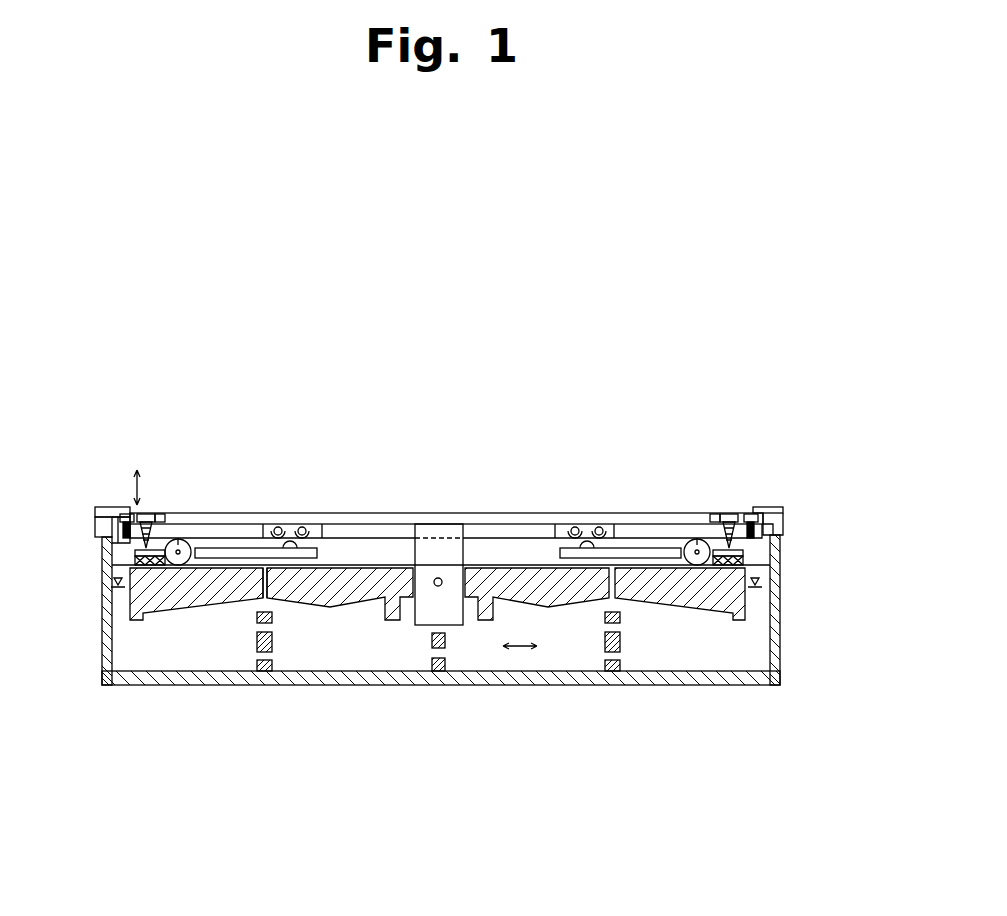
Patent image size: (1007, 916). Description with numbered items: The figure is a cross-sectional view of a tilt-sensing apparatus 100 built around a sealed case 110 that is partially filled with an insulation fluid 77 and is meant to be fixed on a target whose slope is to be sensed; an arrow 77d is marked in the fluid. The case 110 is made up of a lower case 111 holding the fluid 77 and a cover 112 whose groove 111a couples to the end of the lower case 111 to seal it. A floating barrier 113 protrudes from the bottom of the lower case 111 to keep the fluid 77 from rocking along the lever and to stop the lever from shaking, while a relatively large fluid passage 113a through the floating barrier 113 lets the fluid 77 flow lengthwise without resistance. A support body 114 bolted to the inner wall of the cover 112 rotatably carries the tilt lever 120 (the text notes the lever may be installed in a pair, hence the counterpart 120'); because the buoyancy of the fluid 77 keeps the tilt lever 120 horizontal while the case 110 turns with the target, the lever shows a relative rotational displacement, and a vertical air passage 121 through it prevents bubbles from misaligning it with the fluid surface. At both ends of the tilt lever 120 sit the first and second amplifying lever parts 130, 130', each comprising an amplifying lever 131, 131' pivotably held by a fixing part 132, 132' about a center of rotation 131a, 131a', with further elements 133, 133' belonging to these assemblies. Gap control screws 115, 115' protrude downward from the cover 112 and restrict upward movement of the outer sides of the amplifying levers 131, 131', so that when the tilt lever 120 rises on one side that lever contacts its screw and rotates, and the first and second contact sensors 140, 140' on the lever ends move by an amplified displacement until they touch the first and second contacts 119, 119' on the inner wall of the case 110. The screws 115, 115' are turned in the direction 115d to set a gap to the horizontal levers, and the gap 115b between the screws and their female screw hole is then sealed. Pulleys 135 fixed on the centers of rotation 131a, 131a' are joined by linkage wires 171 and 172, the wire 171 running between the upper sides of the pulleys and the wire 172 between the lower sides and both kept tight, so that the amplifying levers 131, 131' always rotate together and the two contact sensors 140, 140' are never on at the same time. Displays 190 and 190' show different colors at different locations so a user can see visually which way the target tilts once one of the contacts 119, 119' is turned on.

The tilt-sensing apparatus 100 is at (90, 447).
The insulation fluid 77 is at (703, 643).
The tank width direction 77d is at (522, 648).
The case 110 is at (445, 514).
The lower case 111 is at (578, 680).
The groove 111a is at (781, 543).
The cover 112 is at (523, 513).
The floating barrier 113 is at (266, 655).
The fluid passage 113a is at (272, 658).
The support body 114 is at (452, 538).
The gap control screw 115 is at (97, 568).
The gap control screw 115' is at (779, 571).
The gap between gap control screw and female screw hole 115b is at (130, 508).
The gap adjustment direction 115d is at (131, 478).
The first contact 119 is at (292, 487).
The second contact 119' is at (584, 486).
The tilt lever 120 is at (340, 665).
The float body 120' is at (605, 663).
The air passage 121 is at (262, 598).
The first amplifying lever part 130 is at (141, 494).
The second amplifying lever part 130' is at (733, 512).
The first amplifying lever 131 is at (191, 514).
The second amplifying lever 131' is at (683, 528).
The center of rotation 131a is at (187, 491).
The center of rotation 131a' is at (685, 506).
The fixing part 132 is at (185, 495).
The fixing part 132' is at (686, 510).
The roller mount 133 is at (168, 482).
The roller mount 133' is at (705, 497).
The pulley 135 is at (150, 590).
The first contact sensor 140 is at (270, 514).
The second contact sensor 140' is at (610, 519).
The linkage wire 171 is at (335, 545).
The linkage wire 172 is at (342, 562).
The display 190 is at (80, 522).
The display 190' is at (797, 517).